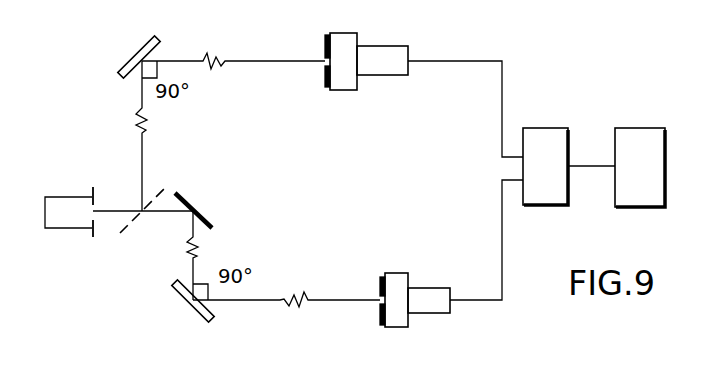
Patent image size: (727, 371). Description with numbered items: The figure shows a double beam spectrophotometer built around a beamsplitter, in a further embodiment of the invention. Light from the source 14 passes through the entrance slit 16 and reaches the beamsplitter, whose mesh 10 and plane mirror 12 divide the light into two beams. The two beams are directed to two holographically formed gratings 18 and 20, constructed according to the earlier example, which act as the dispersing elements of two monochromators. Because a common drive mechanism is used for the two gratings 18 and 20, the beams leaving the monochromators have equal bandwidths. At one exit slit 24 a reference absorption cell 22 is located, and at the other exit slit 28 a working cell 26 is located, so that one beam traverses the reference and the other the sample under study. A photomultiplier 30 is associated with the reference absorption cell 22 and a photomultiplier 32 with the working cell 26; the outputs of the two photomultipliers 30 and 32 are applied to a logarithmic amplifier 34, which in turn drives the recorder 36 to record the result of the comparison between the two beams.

The mesh 10 is at (157, 192).
The plane mirror 12 is at (210, 213).
The source 14 is at (68, 212).
The entrance slit 16 is at (98, 203).
The holographically formed grating 18 is at (118, 63).
The holographically formed grating 20 is at (178, 302).
The reference absorption cell 22 is at (343, 90).
The exit slit 24 is at (322, 67).
The working cell 26 is at (395, 273).
The exit slit 28 is at (380, 296).
The photomultiplier 30 is at (398, 75).
The photomultiplier 32 is at (439, 288).
The logarithmic amplifier 34 is at (549, 128).
The recorder 36 is at (646, 140).